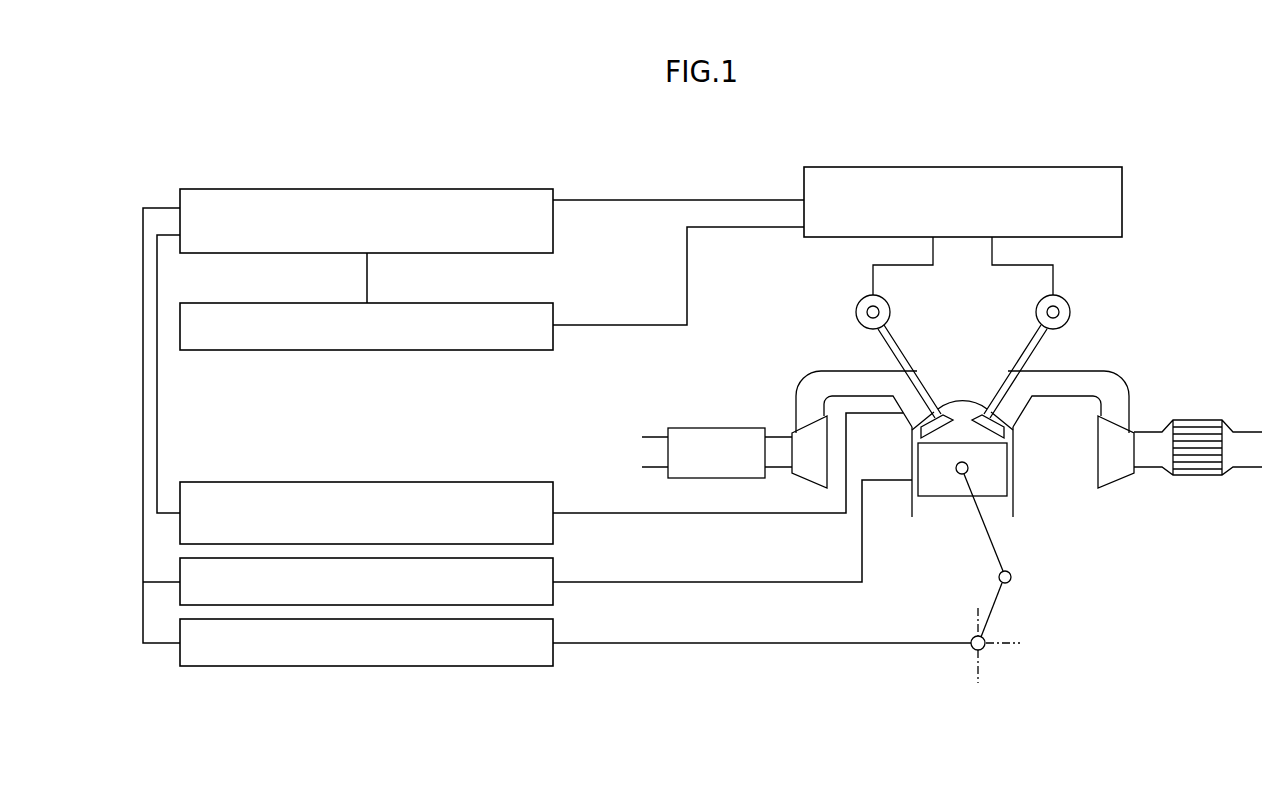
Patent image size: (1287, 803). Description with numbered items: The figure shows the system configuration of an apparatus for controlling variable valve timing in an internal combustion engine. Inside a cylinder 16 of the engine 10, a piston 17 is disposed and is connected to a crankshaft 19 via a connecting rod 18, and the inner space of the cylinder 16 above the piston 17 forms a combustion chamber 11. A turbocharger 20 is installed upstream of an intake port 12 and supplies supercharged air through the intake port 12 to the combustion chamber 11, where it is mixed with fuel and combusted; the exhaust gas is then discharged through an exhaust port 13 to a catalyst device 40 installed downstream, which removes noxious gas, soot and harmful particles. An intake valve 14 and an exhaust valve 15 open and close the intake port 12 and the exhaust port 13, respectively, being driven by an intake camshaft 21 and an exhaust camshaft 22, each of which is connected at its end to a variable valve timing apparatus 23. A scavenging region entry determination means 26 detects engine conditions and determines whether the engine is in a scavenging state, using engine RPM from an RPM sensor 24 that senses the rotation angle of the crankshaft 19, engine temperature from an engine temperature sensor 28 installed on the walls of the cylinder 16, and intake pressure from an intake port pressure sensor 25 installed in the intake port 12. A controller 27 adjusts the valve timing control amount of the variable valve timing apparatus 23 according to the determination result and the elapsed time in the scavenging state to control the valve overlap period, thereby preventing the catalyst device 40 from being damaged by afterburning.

The engine 10 is at (773, 381).
The combustion chamber 11 is at (962, 410).
The intake port 12 is at (830, 370).
The exhaust port 13 is at (1097, 371).
The intake valve 14 is at (886, 346).
The exhaust valve 15 is at (1043, 347).
The cylinder 16 is at (907, 495).
The piston 17 is at (1007, 482).
The connecting rod 18 is at (993, 540).
The crankshaft 19 is at (993, 610).
The turbocharger 20 is at (668, 452).
The intake camshaft 21 is at (860, 297).
The exhaust camshaft 22 is at (1067, 297).
The variable valve timing apparatus 23 is at (1122, 213).
The RPM sensor 24 is at (553, 655).
The intake port pressure sensor 25 is at (553, 532).
The scavenging region entry determination means 26 is at (553, 239).
The controller 27 is at (553, 344).
The engine temperature sensor 28 is at (553, 594).
The catalyst device 40 is at (1198, 420).